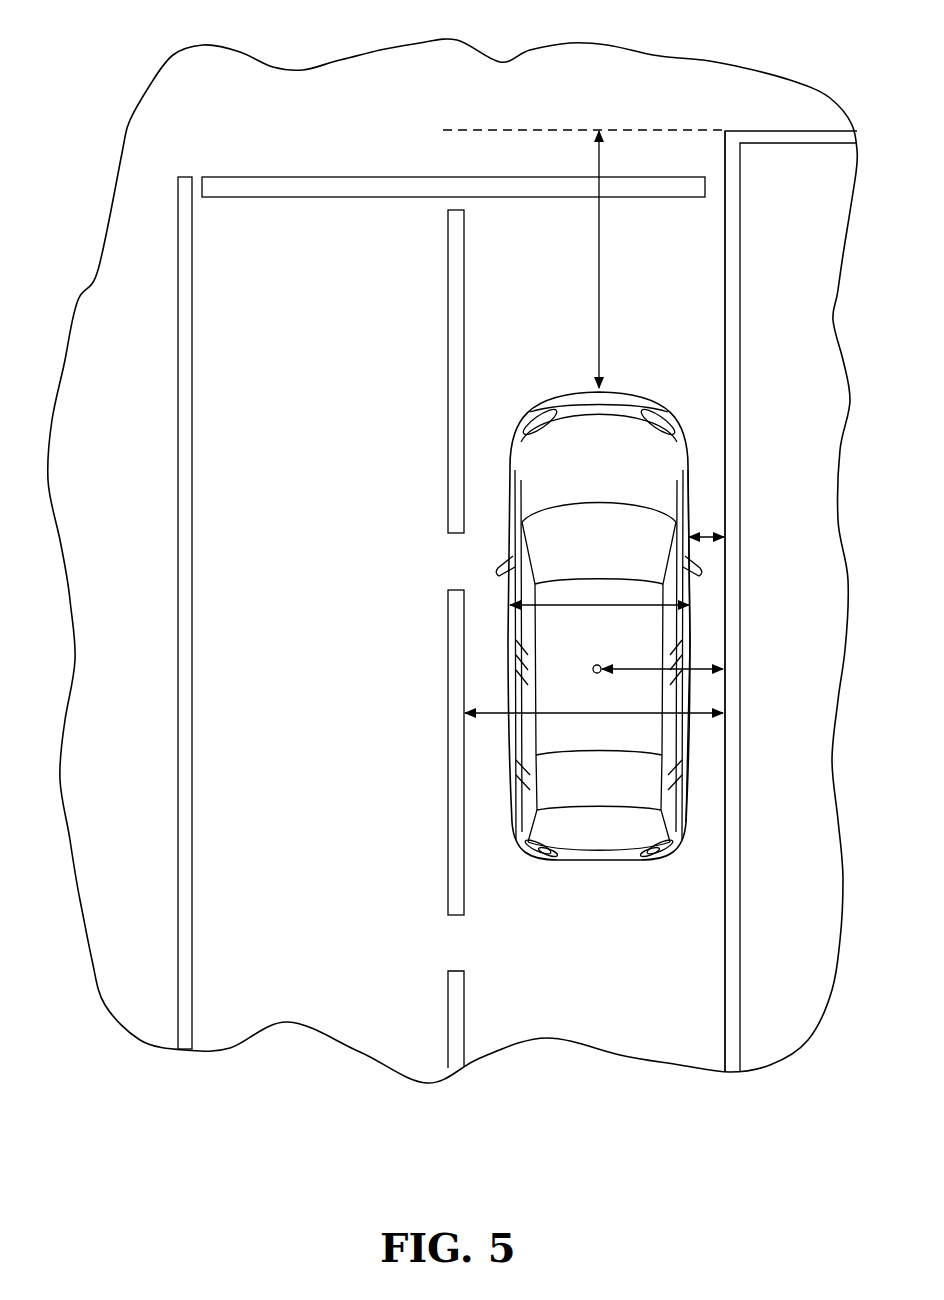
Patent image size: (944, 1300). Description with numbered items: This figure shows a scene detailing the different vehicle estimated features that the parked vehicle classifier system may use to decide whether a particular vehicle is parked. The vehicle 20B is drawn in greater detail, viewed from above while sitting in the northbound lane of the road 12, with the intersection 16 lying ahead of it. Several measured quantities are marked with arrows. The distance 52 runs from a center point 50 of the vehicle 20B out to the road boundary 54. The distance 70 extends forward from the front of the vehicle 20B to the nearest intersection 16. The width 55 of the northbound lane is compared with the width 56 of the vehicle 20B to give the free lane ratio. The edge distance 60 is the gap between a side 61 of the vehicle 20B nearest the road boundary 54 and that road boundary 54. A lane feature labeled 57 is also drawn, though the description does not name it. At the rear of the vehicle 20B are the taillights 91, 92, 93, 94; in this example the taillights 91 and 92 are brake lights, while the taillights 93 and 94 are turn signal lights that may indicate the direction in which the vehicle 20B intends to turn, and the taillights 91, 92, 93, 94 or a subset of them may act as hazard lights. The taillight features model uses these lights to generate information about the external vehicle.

The intersection 16 is at (585, 97).
The road 12 is at (690, 340).
The vehicle 20B is at (655, 456).
The center point 50 is at (599, 665).
The distance 52 is at (697, 671).
The road boundary 54 is at (720, 638).
The width of the northbound lane 55 is at (500, 708).
The width of the vehicle 56 is at (600, 606).
The lane marking 57 is at (510, 491).
The edge distance 60 is at (707, 538).
The side of the vehicle 61 is at (690, 518).
The distance to the nearest intersection 70 is at (600, 266).
The taillight 91 is at (530, 852).
The taillight 92 is at (664, 853).
The taillight 93 is at (548, 856).
The taillight 94 is at (650, 856).